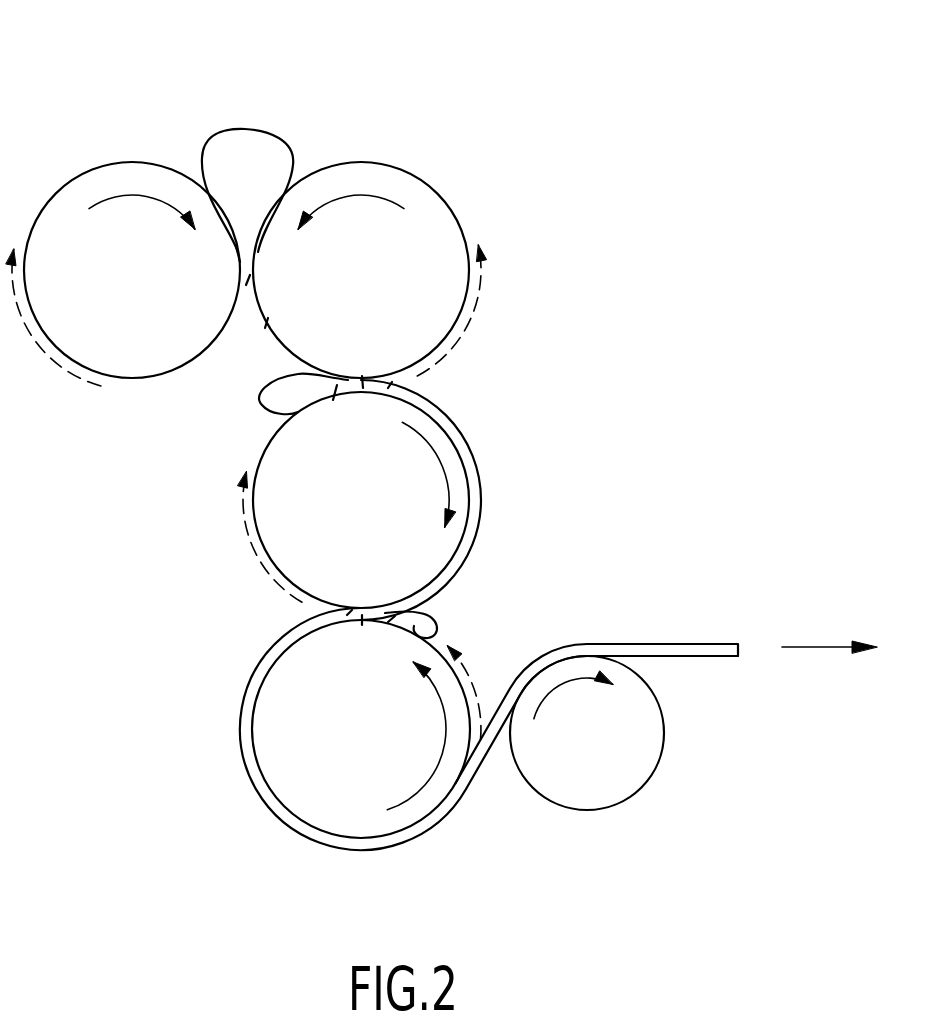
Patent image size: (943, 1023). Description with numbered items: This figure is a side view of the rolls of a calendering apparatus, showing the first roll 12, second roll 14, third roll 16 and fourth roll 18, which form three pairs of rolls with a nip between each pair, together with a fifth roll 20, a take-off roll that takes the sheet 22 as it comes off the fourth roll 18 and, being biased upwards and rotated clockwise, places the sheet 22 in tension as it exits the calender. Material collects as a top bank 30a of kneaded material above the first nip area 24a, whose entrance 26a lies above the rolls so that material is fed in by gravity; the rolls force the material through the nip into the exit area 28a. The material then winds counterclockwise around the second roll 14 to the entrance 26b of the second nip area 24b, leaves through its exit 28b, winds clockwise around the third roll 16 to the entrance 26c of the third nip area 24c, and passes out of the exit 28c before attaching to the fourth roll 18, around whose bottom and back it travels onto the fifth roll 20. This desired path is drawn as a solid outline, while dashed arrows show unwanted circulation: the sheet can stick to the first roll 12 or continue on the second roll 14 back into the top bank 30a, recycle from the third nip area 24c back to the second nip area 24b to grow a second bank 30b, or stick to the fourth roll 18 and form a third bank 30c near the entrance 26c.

The first roll 12 is at (144, 285).
The second roll 14 is at (374, 285).
The third roll 16 is at (374, 513).
The fourth roll 18 is at (374, 743).
The fifth roll 20 is at (604, 743).
The sheet 22 is at (711, 641).
The first nip area 24a is at (250, 275).
The second nip area 24b is at (363, 388).
The third nip area 24c is at (362, 615).
The entrance of the first nip 26a is at (248, 250).
The entrance of the second nip 26b is at (337, 385).
The entrance of the third nip 26c is at (395, 616).
The exit of the first nip 28a is at (265, 328).
The exit of the second nip 28b is at (388, 388).
The exit of the third nip 28c is at (347, 615).
The top bank of kneaded material 30a is at (248, 146).
The second bank of material 30b is at (275, 394).
The third bank of material 30c is at (432, 630).